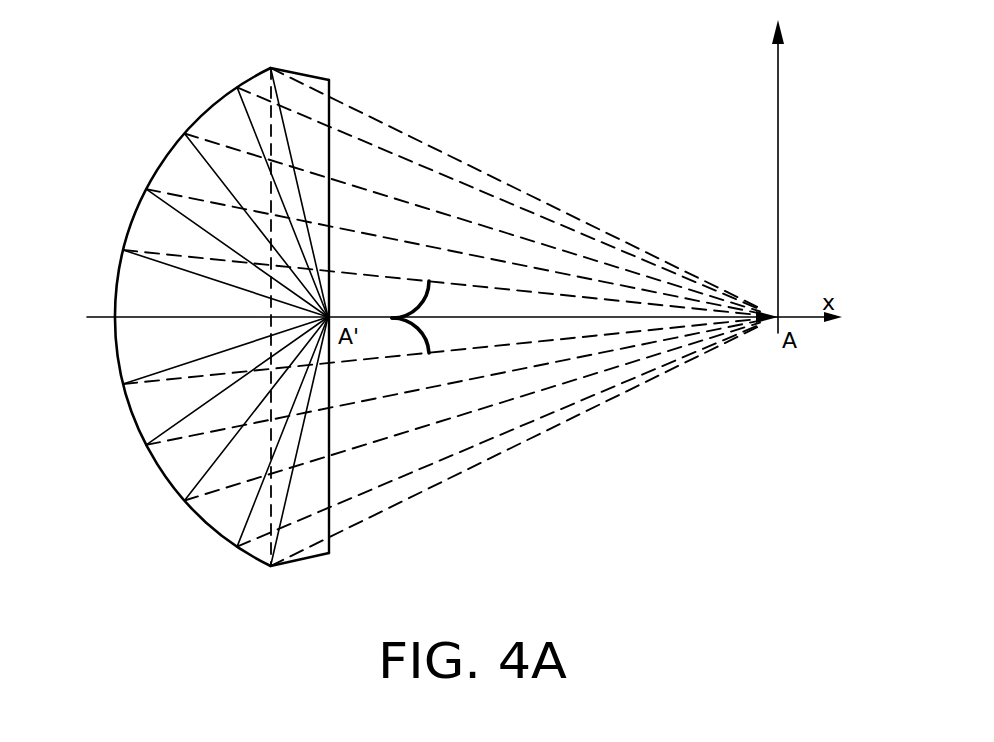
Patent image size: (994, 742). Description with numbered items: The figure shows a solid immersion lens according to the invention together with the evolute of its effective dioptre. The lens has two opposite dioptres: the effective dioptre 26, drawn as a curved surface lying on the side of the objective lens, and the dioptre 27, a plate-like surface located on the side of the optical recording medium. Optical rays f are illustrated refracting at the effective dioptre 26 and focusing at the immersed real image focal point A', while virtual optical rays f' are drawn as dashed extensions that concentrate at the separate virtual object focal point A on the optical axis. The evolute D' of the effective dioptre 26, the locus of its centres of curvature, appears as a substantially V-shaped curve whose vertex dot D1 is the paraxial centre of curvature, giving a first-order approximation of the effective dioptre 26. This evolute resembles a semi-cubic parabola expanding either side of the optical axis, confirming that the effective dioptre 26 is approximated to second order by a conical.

The effective dioptre 26 is at (165, 477).
The dioptre 27 is at (331, 493).
The paraxial centre of curvature D1 is at (390, 317).
The evolute D' is at (468, 315).
The optical rays f is at (212, 549).
The virtual optical rays f' is at (318, 570).